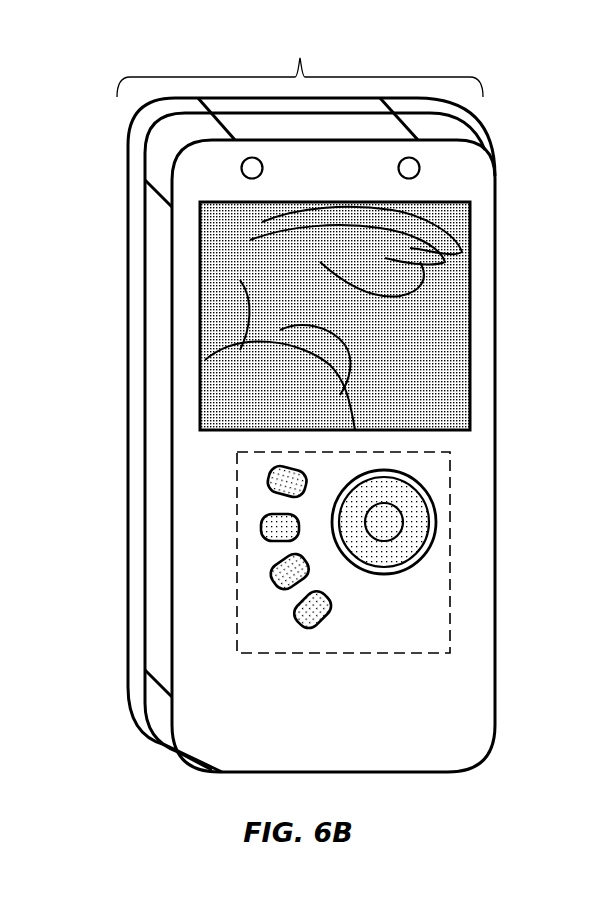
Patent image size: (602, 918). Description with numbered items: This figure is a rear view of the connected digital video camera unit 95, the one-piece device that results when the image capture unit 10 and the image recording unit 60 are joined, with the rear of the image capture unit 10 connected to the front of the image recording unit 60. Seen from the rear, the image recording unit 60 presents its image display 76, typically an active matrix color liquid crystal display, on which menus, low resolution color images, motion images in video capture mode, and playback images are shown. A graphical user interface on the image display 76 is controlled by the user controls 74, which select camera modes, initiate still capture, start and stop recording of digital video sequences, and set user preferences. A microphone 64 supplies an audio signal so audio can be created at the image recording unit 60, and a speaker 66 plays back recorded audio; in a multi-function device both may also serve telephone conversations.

The image capture unit 10 is at (137, 382).
The image recording unit 60 is at (495, 467).
The microphone 64 is at (241, 167).
The speaker 66 is at (420, 164).
The user controls 74 is at (450, 573).
The image display 76 is at (452, 285).
The connected digital video camera unit 95 is at (300, 64).